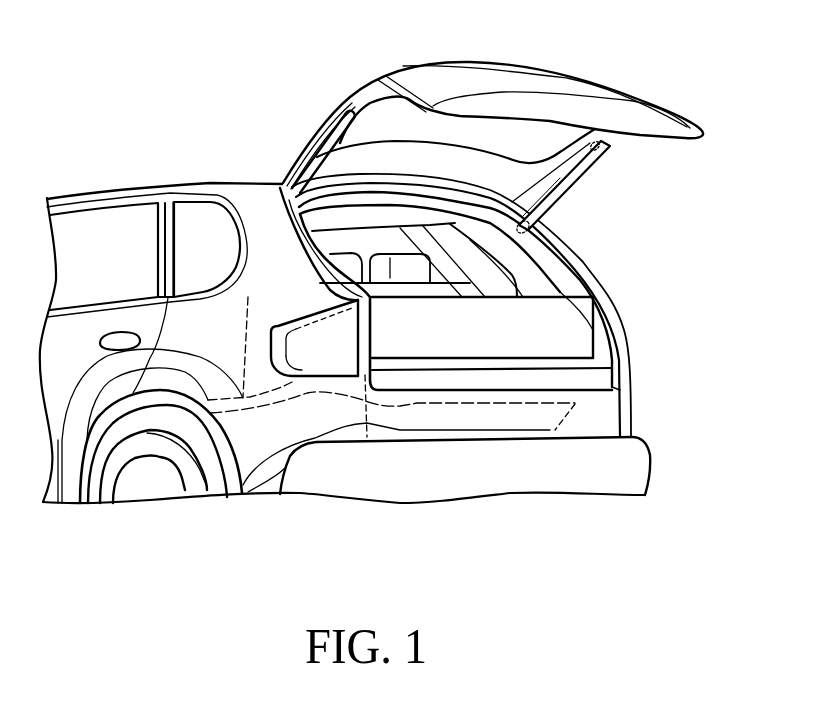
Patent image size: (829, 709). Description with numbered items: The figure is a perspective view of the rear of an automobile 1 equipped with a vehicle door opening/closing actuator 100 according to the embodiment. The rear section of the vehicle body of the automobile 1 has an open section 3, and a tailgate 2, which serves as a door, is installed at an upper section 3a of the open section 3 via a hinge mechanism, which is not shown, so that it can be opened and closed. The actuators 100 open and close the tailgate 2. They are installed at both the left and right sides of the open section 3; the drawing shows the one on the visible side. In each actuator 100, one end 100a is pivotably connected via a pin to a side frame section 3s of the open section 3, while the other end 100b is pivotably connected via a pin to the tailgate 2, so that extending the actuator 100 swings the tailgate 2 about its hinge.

The automobile 1 is at (182, 170).
The tailgate 2 is at (643, 101).
The open section 3 is at (598, 314).
The upper section 3a is at (292, 190).
The side frame section 3s is at (281, 193).
The vehicle door opening/closing actuator 100 is at (574, 198).
The one end 100a is at (521, 232).
The other end 100b is at (598, 146).